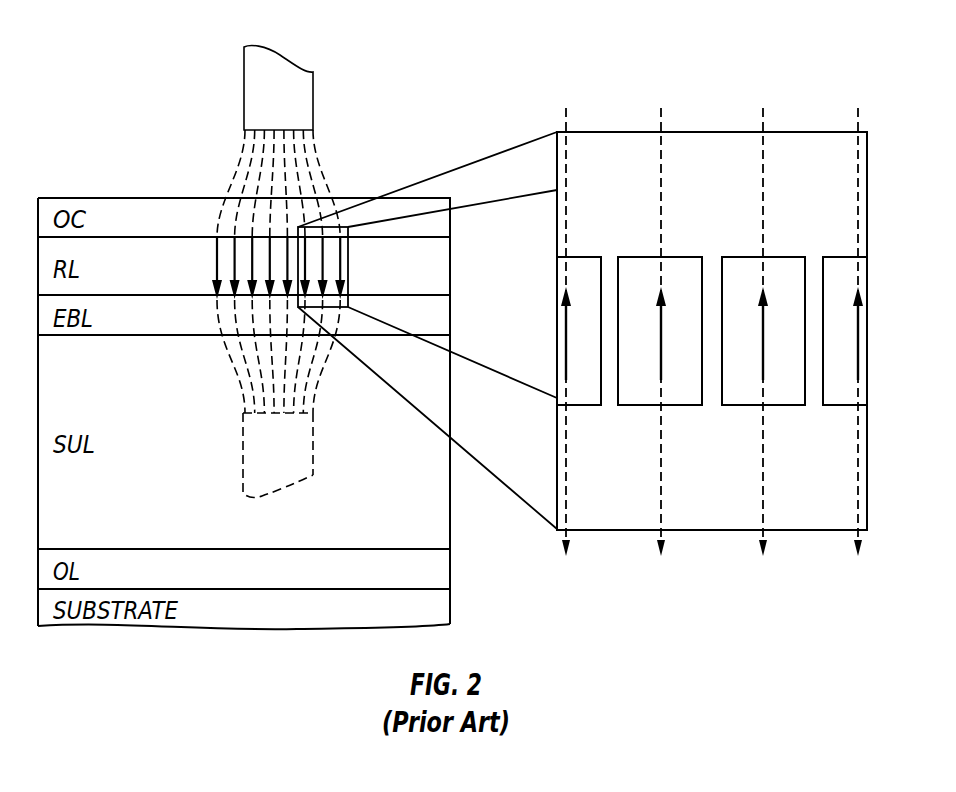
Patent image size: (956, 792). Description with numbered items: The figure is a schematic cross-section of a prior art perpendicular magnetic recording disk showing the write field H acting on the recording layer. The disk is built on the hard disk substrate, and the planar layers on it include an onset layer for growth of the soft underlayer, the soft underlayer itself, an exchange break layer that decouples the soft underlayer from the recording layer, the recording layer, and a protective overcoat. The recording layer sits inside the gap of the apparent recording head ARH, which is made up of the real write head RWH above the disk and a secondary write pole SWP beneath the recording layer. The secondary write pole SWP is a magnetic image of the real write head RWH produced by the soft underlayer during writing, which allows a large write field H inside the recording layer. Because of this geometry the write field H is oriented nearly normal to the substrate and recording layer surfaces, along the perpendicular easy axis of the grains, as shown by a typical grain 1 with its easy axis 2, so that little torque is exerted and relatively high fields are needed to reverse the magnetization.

The typical grain 1 is at (748, 263).
The easy axis 2 is at (762, 373).
The real write head RWH is at (278, 88).
The apparent recording head ARH is at (233, 443).
The secondary write pole SWP is at (278, 455).
The write field H is at (762, 576).